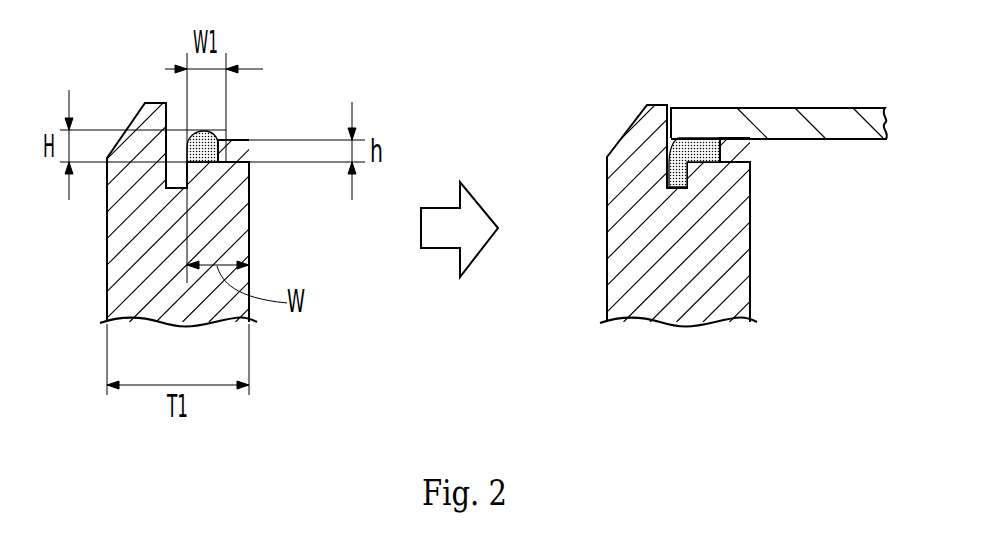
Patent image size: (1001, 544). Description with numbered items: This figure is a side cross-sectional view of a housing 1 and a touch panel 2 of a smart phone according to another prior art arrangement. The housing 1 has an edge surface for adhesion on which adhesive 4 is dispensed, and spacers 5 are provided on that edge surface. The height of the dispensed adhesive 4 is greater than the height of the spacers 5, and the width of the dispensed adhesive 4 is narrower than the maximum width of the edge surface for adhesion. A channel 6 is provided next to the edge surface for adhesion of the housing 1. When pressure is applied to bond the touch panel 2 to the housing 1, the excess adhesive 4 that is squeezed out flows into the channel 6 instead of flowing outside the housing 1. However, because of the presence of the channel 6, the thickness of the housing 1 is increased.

The housing 1 is at (128, 290).
The touch panel 2 is at (835, 122).
The adhesive 4 is at (210, 130).
The spacers 5 is at (238, 151).
The channel 6 is at (165, 178).